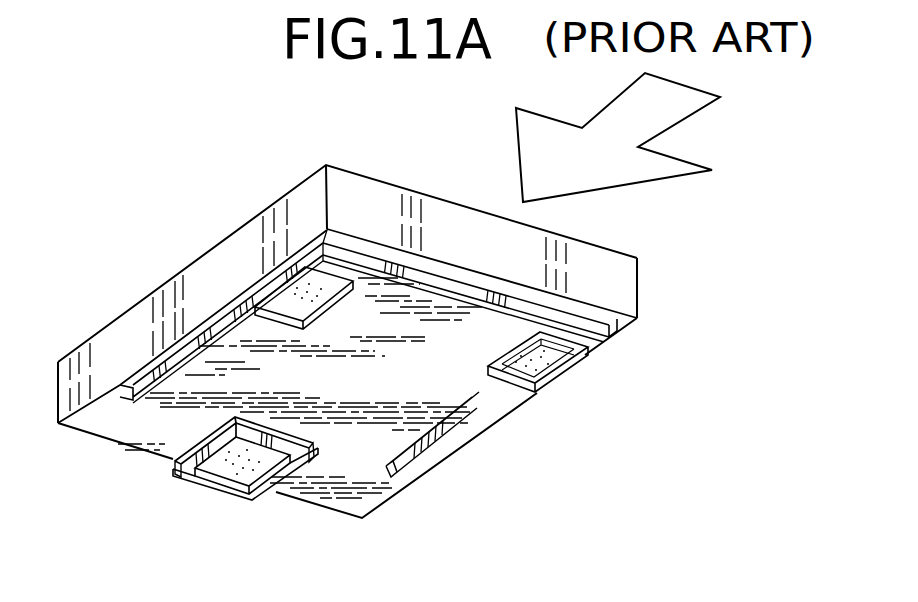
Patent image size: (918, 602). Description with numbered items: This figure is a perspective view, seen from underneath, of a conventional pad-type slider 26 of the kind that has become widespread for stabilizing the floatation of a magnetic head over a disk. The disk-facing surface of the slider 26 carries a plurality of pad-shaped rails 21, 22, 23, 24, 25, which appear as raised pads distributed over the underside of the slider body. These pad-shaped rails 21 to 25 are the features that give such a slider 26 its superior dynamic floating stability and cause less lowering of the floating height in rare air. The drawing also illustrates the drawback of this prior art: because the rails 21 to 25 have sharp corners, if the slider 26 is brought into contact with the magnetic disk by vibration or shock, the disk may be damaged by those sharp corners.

The pad-shaped rail 21 is at (540, 362).
The pad-shaped rail 22 is at (298, 305).
The pad-shaped rail 23 is at (222, 471).
The pad-shaped rail 24 is at (373, 283).
The pad-shaped rail 25 is at (276, 475).
The slider 26 is at (654, 248).